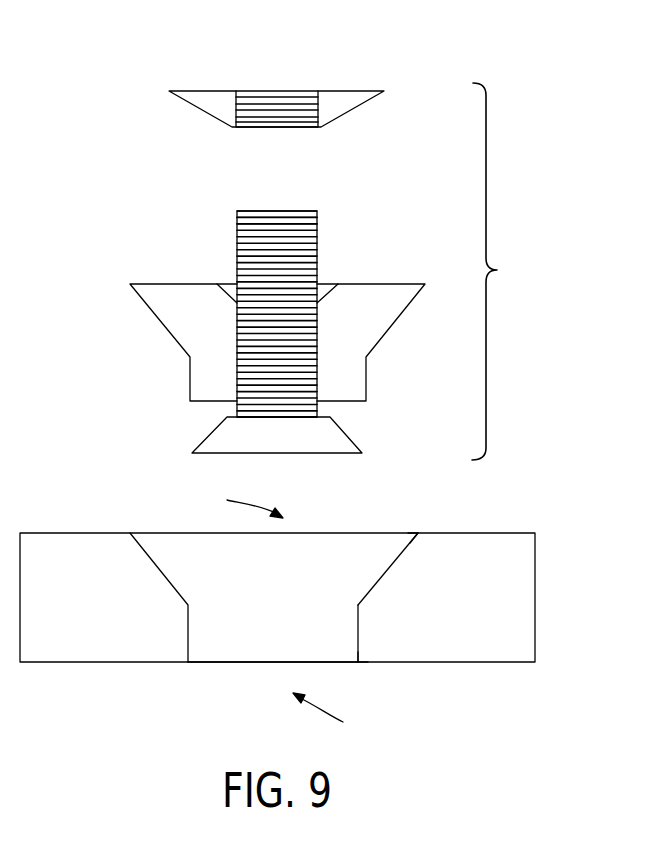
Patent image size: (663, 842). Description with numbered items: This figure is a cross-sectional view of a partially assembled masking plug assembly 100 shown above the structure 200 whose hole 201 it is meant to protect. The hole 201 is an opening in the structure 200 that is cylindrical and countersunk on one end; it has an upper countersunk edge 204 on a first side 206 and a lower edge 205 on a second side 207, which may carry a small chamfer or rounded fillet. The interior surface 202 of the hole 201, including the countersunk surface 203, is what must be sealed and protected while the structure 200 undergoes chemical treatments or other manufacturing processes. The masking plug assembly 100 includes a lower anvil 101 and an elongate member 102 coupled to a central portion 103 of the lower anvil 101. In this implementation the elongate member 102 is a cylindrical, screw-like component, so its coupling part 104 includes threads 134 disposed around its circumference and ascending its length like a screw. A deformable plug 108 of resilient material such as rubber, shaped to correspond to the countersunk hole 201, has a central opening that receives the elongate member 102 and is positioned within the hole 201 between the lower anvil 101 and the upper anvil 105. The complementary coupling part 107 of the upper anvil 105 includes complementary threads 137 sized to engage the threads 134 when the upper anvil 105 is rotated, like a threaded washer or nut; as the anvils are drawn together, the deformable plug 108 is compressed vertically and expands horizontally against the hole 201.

The masking plug assembly 100 is at (500, 271).
The lower anvil 101 is at (350, 433).
The elongate member 102 is at (318, 246).
The central portion 103 is at (237, 417).
The coupling part 104 is at (237, 277).
The upper anvil 105 is at (358, 103).
The complementary coupling part 107 is at (295, 100).
The deformable plug 108 is at (409, 300).
The threads 134 is at (248, 250).
The complementary threads 137 is at (268, 102).
The structure 200 is at (535, 583).
The hole 201 is at (268, 638).
The interior surface 202 is at (358, 638).
The countersunk surface 203 is at (370, 585).
The upper countersunk edge 204 is at (415, 535).
The lower edge 205 is at (358, 662).
The first side 206 is at (236, 503).
The second side 207 is at (335, 714).